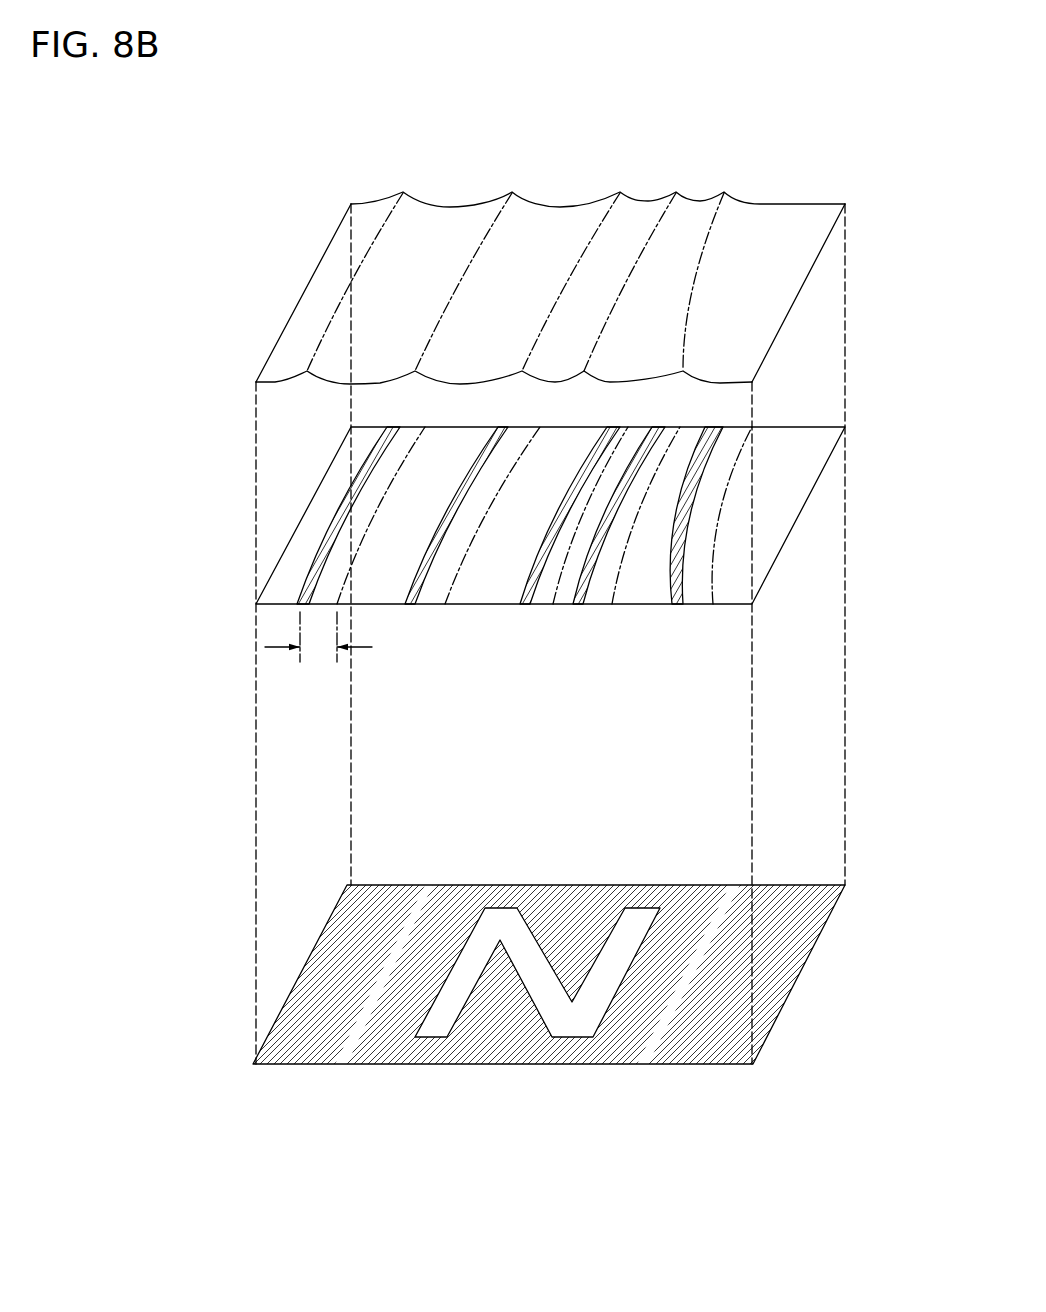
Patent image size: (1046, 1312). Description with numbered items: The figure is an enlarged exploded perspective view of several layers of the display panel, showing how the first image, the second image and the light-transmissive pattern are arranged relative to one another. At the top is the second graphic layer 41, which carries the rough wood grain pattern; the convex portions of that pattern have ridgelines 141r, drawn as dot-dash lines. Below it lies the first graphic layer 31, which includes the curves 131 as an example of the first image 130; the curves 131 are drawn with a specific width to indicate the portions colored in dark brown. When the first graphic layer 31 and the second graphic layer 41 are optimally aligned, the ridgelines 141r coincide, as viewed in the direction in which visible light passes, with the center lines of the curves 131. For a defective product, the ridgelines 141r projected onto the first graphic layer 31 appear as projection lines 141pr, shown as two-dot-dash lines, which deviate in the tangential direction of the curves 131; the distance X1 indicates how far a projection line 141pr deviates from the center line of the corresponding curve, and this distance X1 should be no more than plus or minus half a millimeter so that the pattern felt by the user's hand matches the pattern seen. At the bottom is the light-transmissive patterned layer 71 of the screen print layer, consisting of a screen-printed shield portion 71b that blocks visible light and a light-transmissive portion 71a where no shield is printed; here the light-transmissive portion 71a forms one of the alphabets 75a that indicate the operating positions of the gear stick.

The second graphic layer 41 is at (550, 245).
The ridgelines 141r is at (363, 253).
The first graphic layer 31 is at (512, 557).
The curves 131 is at (277, 515).
The first image 130 is at (307, 570).
The projection lines 141pr is at (363, 540).
The distance X1 is at (318, 655).
The light-transmissive patterned layer 71 is at (543, 992).
The light-transmissive portion 71a is at (580, 1022).
The shield portion 71b is at (617, 1040).
The alphabets 75a is at (521, 992).